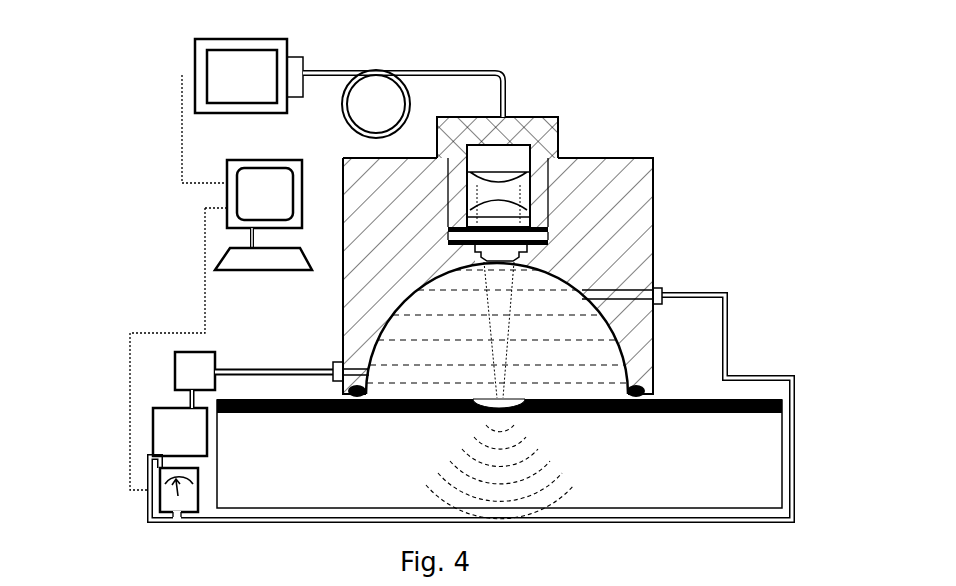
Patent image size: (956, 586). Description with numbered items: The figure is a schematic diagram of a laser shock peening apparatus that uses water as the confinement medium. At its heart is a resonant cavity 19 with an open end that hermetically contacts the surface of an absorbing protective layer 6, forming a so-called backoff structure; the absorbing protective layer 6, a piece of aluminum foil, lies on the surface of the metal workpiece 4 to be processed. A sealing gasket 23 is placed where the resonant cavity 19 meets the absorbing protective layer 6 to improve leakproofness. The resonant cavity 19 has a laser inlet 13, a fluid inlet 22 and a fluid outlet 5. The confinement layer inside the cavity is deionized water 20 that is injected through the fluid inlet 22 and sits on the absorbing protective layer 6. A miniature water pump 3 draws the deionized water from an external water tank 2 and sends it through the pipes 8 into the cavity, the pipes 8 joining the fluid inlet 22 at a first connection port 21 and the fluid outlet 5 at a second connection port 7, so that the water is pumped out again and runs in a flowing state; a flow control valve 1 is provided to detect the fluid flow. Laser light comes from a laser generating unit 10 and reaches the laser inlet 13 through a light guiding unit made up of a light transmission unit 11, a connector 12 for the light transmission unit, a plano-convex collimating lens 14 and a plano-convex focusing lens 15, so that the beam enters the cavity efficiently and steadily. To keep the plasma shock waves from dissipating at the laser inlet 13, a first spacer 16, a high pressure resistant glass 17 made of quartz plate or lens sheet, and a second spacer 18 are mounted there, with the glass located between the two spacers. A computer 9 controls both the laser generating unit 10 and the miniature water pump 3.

The flow control valve 1 is at (155, 482).
The water tank 2 is at (172, 432).
The miniature water pump 3 is at (193, 370).
The workpiece 4 is at (340, 452).
The fluid outlet 5 is at (373, 417).
The absorbing protective layer 6 is at (327, 398).
The second connection port 7 is at (333, 362).
The pipe 8 is at (230, 367).
The computer 9 is at (253, 192).
The laser generating unit 10 is at (237, 85).
The light transmission unit 11 is at (402, 66).
The connector for light transmission unit 12 is at (513, 145).
The laser inlet 13 is at (520, 152).
The plano-convex collimating lens 14 is at (558, 136).
The plano-convex focusing lens 15 is at (590, 172).
The spacer A 16 is at (548, 190).
The high pressure resistant glass 17 is at (548, 212).
The spacer B 18 is at (548, 231).
The resonant cavity 19 is at (548, 243).
The deionized water 20 is at (527, 256).
The first connection port 21 is at (660, 304).
The fluid inlet 22 is at (640, 330).
The sealing gasket 23 is at (646, 393).